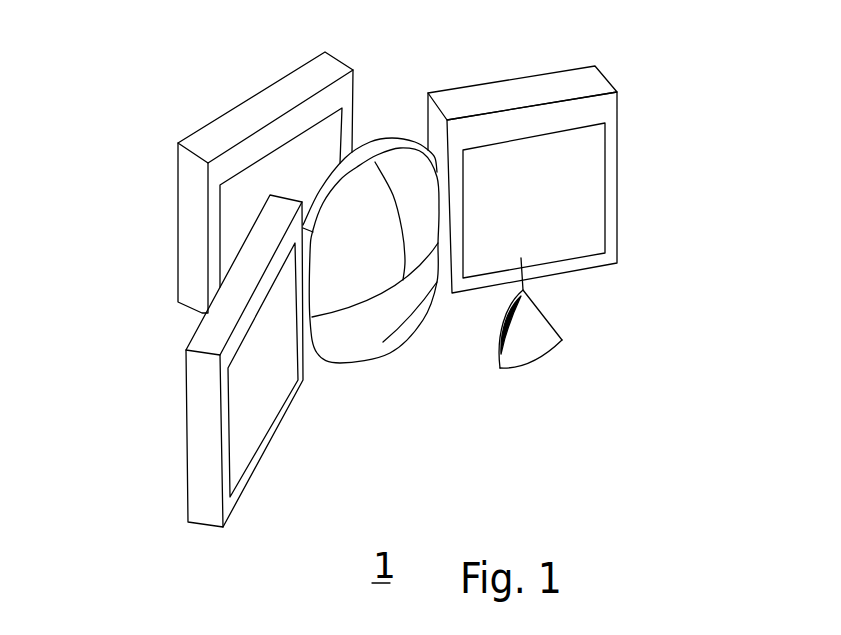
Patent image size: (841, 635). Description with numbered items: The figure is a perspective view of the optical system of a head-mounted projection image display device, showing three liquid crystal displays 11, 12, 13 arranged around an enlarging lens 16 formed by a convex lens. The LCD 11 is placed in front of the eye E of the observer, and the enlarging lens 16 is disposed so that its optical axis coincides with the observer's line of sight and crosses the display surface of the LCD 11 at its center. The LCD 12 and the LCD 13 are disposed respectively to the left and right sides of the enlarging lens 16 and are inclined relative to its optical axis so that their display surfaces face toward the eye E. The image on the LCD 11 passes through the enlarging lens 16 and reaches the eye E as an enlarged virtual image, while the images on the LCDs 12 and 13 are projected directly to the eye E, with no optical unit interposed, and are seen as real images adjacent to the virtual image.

The liquid crystal display 11 is at (285, 165).
The liquid crystal display 12 is at (265, 398).
The liquid crystal display 13 is at (588, 204).
The enlarging lens 16 is at (367, 343).
The eye E is at (523, 370).